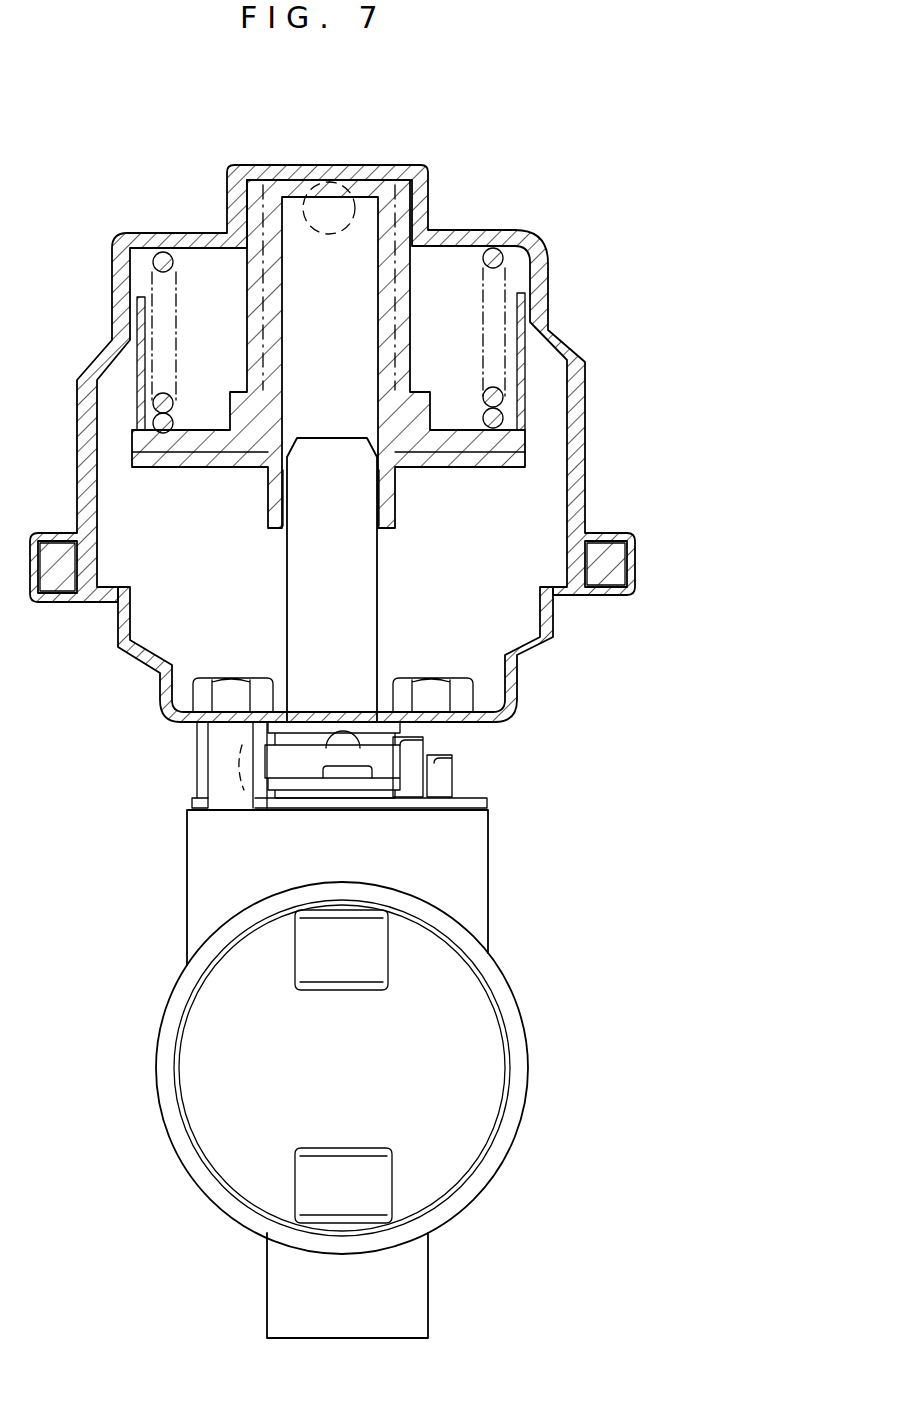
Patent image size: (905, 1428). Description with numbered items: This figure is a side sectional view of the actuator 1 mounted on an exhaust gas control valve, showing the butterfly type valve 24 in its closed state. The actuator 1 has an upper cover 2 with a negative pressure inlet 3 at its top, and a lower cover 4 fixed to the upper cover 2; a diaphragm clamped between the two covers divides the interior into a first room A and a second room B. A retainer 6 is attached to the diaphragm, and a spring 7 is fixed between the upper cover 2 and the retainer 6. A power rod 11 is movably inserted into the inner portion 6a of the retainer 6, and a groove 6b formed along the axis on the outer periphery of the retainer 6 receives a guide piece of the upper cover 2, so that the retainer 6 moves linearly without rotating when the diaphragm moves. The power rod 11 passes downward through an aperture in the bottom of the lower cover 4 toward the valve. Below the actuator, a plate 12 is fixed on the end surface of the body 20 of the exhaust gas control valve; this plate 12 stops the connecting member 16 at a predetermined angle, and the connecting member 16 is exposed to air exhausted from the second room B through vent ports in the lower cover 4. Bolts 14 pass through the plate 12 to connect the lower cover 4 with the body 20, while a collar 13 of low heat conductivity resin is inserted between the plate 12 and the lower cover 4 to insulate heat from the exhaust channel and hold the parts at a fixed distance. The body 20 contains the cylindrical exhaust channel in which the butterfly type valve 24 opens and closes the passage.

The actuator 1 is at (585, 300).
The upper cover 2 is at (590, 392).
The negative pressure inlet 3 is at (330, 190).
The lower cover 4 is at (553, 645).
The retainer 6 is at (386, 195).
The inner portion of the retainer 6a is at (372, 422).
The groove of the retainer 6b is at (428, 212).
The spring 7 is at (160, 275).
The power rod 11 is at (300, 577).
The plate 12 is at (478, 805).
The collar 13 is at (196, 782).
The bolts 14 is at (228, 692).
The connecting member 16 is at (410, 752).
The body 20 is at (476, 882).
The butterfly type valve 24 is at (480, 1045).
The first room A is at (125, 268).
The second room B is at (120, 548).